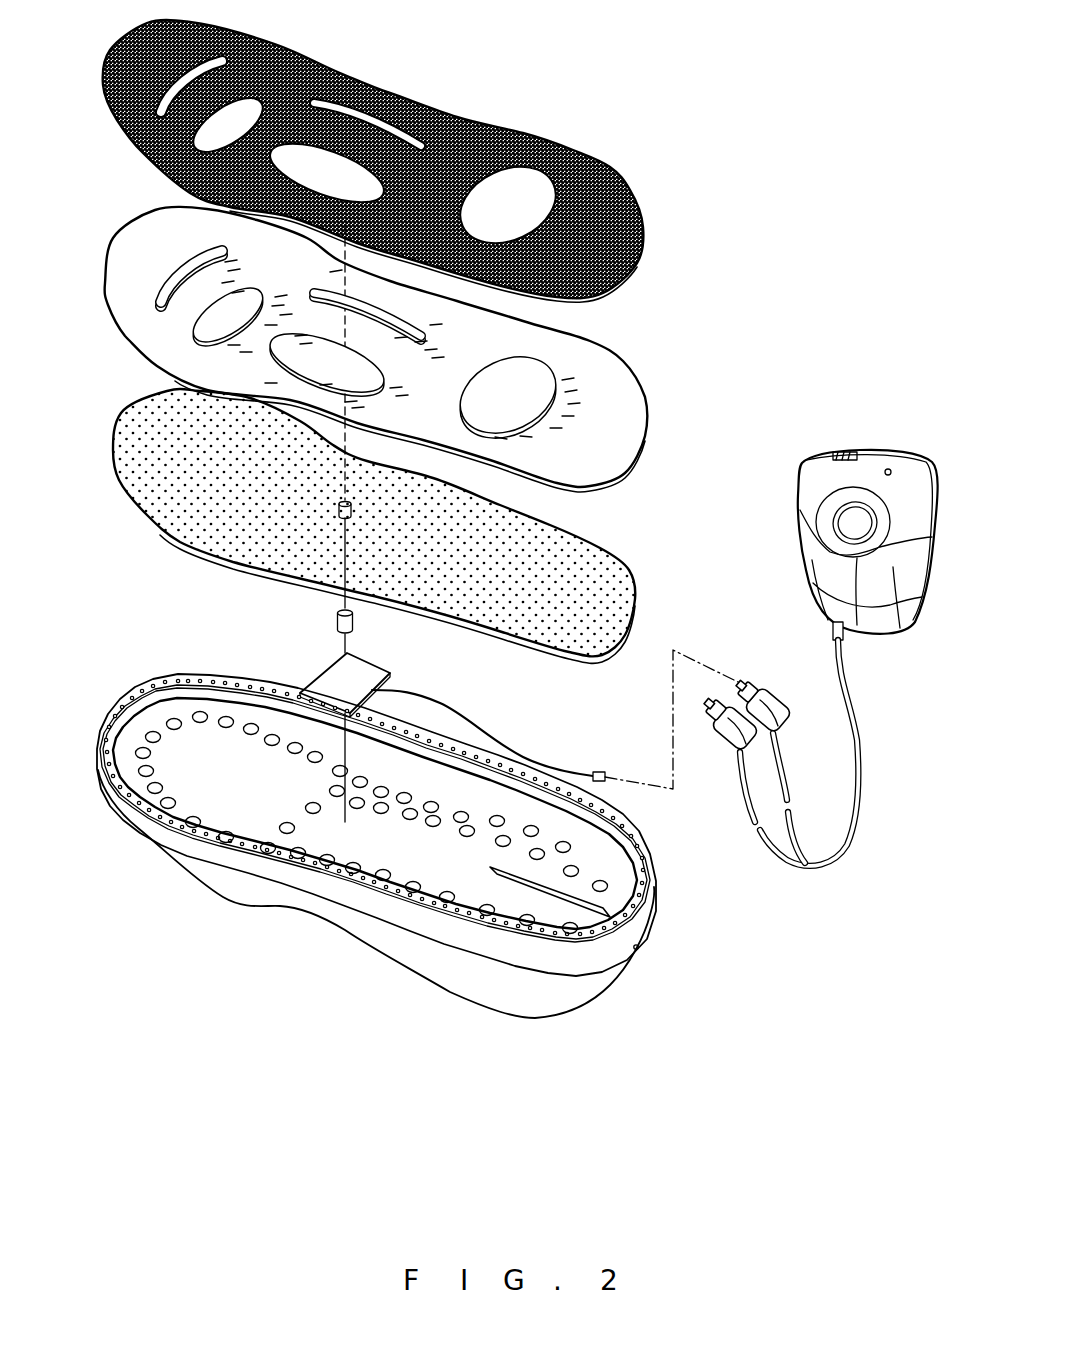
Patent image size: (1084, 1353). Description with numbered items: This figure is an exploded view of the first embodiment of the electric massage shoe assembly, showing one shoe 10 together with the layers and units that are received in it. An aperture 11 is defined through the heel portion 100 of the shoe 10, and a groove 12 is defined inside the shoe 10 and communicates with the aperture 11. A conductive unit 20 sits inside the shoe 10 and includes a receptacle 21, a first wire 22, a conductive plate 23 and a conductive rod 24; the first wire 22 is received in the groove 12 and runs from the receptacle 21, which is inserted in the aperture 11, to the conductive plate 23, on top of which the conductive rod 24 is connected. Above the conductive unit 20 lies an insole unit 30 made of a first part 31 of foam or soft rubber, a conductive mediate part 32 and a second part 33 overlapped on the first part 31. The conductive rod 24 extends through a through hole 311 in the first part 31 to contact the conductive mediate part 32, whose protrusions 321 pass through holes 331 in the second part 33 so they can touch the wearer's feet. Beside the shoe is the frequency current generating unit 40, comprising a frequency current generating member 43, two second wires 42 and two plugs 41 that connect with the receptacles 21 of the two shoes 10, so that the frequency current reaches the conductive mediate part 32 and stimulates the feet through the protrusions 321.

The shoe 10 is at (406, 888).
The heel portion 100 is at (533, 1005).
The aperture 11 is at (640, 951).
The groove 12 is at (603, 912).
The conductive unit 20 is at (503, 699).
The receptacle 21 is at (603, 770).
The first wire 22 is at (450, 705).
The conductive plate 23 is at (372, 680).
The conductive rod 24 is at (333, 626).
The insole unit 30 is at (424, 342).
The first part 31 is at (408, 526).
The through hole 311 is at (337, 503).
The conductive mediate part 32 is at (415, 349).
The protrusion 321 is at (540, 380).
The second part 33 is at (414, 161).
The hole 331 is at (533, 187).
The frequency current generating unit 40 is at (795, 658).
The plug 41 is at (747, 683).
The second wire 42 is at (857, 738).
The frequency current generating member 43 is at (800, 543).